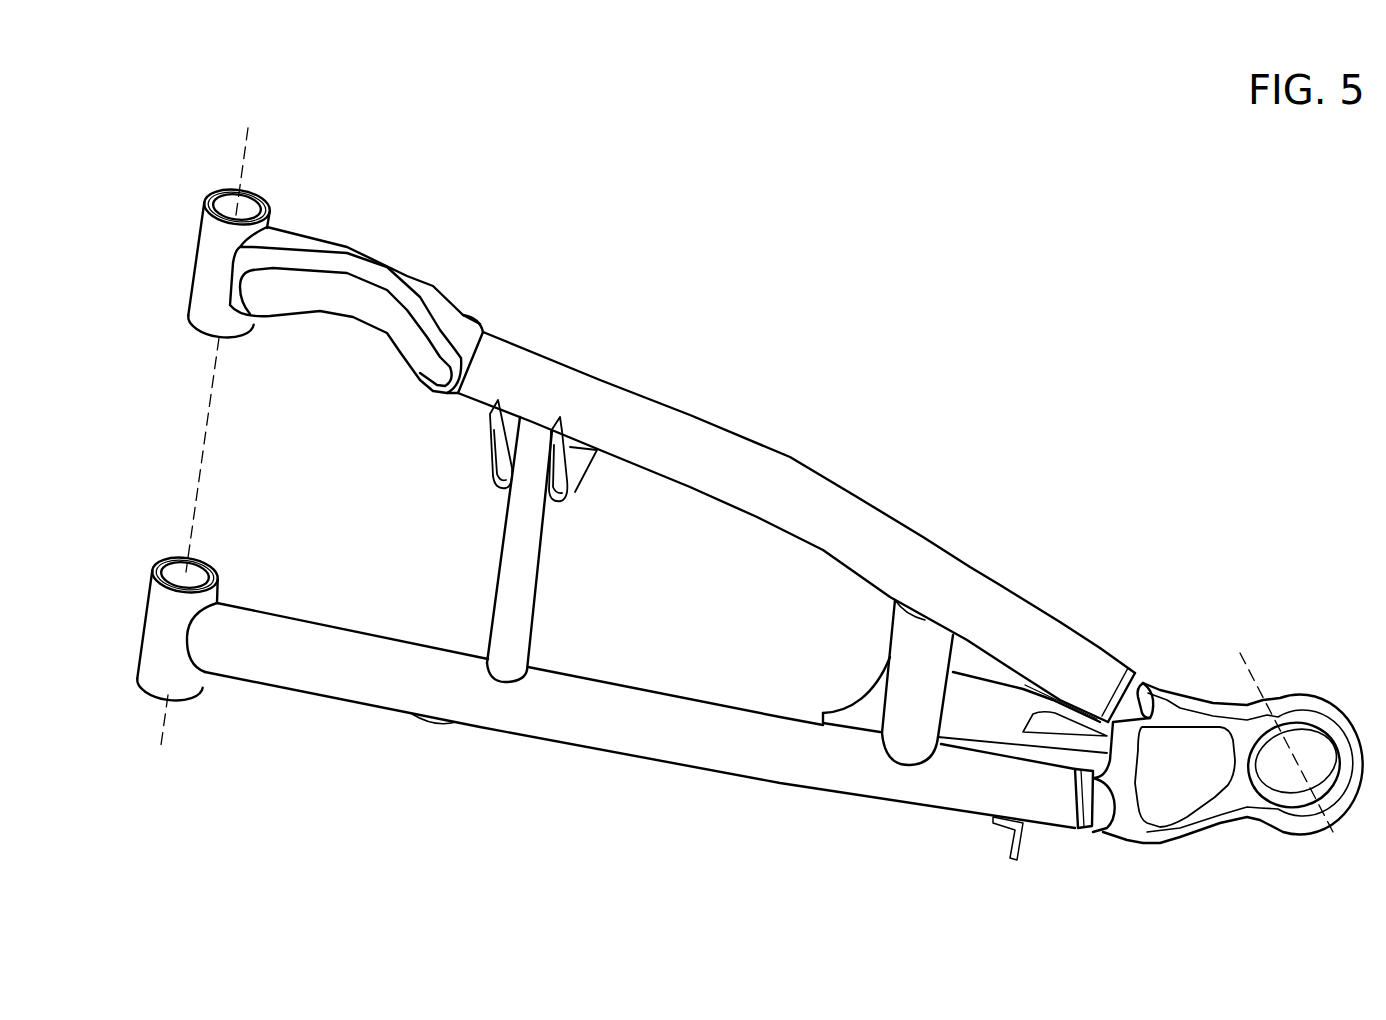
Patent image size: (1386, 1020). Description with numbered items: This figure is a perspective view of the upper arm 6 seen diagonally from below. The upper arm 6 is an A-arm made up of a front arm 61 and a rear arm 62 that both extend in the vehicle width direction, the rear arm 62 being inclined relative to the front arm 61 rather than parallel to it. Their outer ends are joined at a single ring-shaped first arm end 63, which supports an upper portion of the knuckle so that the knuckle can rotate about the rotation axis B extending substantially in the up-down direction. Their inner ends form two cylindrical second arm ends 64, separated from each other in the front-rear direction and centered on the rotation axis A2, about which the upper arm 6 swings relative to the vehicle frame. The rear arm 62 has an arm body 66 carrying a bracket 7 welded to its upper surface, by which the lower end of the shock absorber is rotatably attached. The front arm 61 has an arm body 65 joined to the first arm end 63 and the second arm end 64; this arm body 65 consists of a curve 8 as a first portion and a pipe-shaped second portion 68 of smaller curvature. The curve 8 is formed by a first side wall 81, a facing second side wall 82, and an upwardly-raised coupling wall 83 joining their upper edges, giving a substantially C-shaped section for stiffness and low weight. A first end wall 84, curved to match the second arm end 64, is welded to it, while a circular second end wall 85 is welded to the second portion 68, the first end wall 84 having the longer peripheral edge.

The upper arm 6 is at (855, 405).
The bracket 7 is at (860, 703).
The curve 8 is at (432, 283).
The front arm 61 is at (698, 408).
The rear arm 62 is at (615, 753).
The first arm end 63 is at (1303, 697).
The second arm end 64 is at (213, 192).
The arm body 65 is at (617, 246).
The arm body 66 is at (740, 757).
The second portion 68 is at (565, 387).
The first side wall 81 is at (343, 247).
The second side wall 82 is at (293, 313).
The coupling wall 83 is at (360, 283).
The first end wall 84 is at (254, 288).
The second end wall 85 is at (434, 373).
The rotation axis A2 is at (254, 145).
The rotation axis B is at (1257, 660).